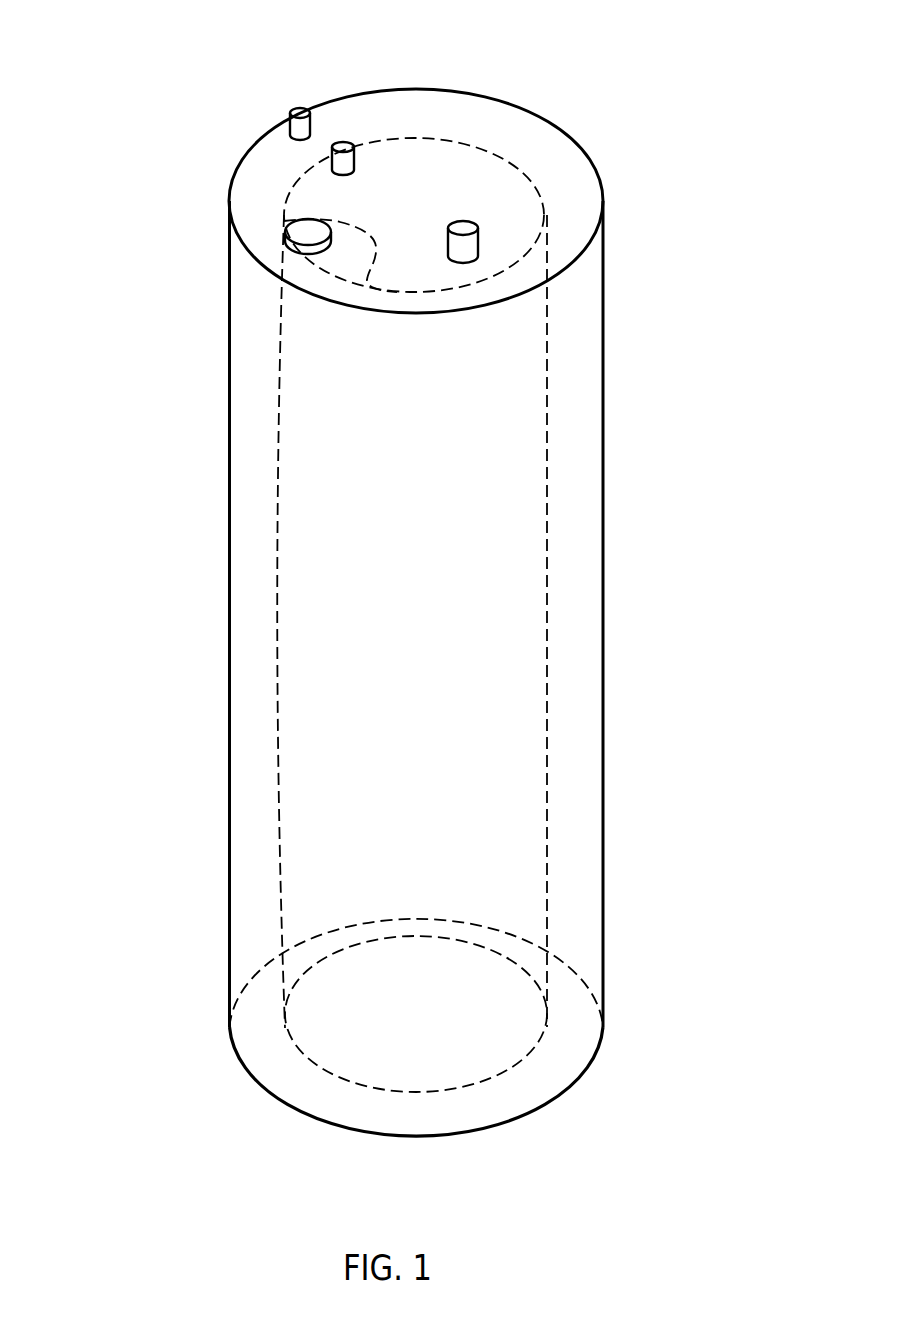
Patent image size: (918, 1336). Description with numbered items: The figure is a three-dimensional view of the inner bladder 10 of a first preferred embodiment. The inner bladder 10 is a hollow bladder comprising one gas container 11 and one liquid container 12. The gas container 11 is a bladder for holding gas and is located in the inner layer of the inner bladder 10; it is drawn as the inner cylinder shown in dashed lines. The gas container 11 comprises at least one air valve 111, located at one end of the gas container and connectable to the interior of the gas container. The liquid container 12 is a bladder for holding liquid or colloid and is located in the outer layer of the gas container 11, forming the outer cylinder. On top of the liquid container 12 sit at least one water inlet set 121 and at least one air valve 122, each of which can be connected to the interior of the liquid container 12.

The inner bladder 10 is at (158, 663).
The gas container 11 is at (506, 1068).
The liquid container 12 is at (302, 1116).
The air valve 111 is at (343, 145).
The water inlet set 121 is at (303, 230).
The air valve 122 is at (298, 110).